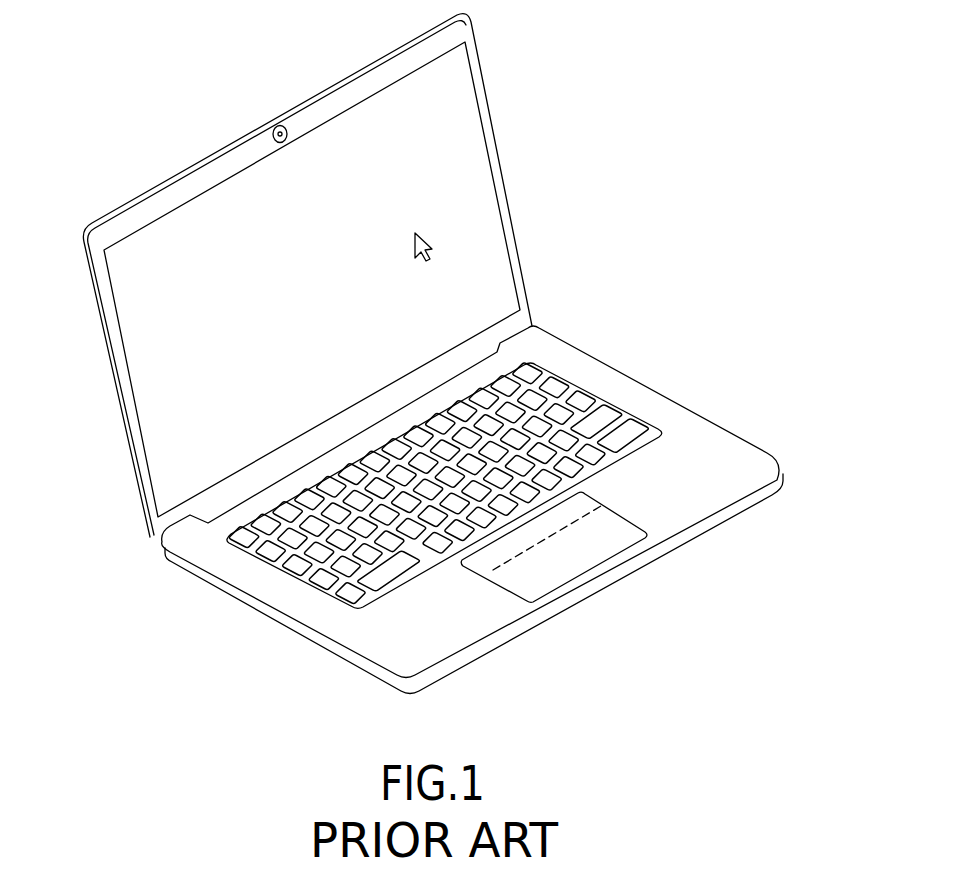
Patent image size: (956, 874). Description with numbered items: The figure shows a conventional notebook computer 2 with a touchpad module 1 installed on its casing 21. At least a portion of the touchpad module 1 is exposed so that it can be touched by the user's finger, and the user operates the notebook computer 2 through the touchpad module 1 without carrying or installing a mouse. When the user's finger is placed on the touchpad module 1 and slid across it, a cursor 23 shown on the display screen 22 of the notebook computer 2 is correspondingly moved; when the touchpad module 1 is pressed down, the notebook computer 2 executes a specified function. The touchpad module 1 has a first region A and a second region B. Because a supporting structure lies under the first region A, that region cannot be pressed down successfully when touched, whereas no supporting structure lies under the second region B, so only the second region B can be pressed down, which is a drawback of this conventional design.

The touchpad module 1 is at (597, 530).
The notebook computer 2 is at (433, 354).
The casing 21 is at (472, 510).
The display screen 22 is at (310, 275).
The cursor 23 is at (420, 237).
The first region A is at (489, 557).
The second region B is at (527, 575).